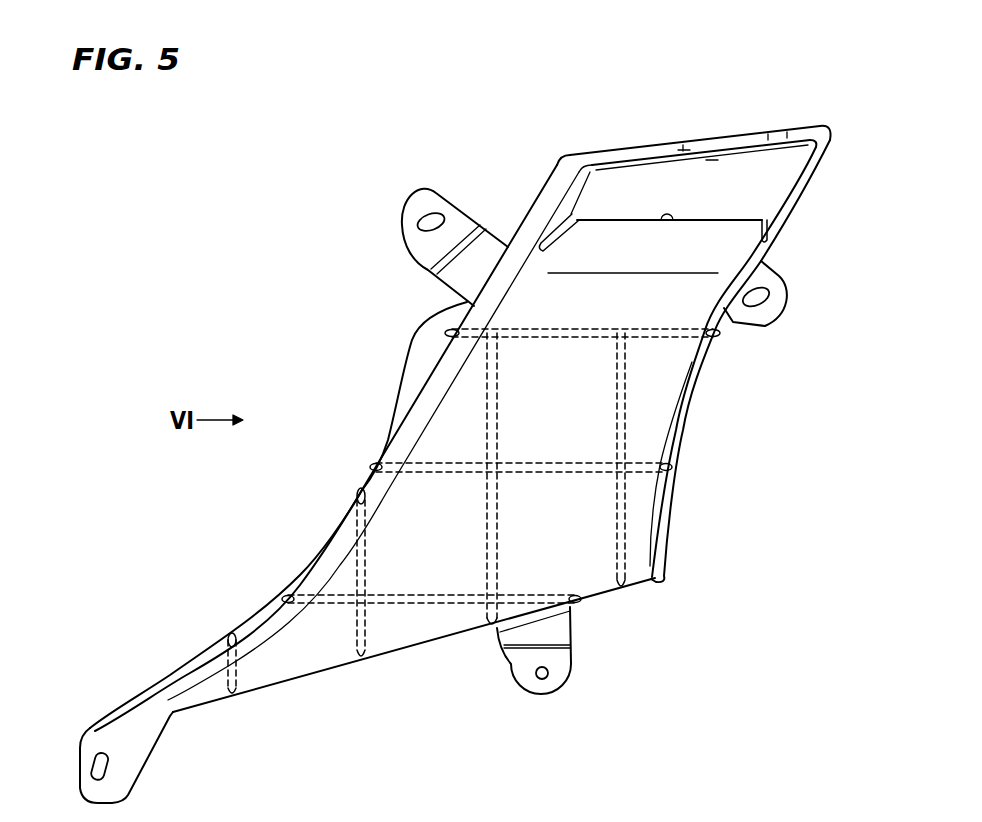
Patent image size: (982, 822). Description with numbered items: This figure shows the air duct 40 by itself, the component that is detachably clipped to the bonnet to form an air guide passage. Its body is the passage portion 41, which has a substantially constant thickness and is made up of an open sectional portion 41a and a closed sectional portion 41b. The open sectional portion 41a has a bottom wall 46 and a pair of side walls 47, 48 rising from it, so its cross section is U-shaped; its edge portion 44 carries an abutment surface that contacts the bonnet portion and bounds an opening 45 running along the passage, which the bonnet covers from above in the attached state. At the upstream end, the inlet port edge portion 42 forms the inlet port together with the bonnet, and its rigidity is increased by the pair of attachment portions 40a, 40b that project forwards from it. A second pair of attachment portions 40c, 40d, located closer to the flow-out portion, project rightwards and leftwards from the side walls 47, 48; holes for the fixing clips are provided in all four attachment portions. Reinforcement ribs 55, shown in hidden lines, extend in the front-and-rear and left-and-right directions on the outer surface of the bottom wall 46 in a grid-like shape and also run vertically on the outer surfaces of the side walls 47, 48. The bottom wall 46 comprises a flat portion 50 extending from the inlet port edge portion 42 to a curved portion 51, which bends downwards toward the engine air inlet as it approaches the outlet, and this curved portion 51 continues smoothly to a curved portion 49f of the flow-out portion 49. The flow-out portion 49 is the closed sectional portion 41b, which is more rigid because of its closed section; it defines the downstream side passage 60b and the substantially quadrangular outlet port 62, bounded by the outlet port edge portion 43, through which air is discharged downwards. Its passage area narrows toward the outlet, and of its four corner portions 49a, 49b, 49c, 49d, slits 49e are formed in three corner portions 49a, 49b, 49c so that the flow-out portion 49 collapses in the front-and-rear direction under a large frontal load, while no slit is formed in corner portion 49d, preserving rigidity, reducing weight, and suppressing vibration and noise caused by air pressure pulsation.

The air duct 40 is at (373, 191).
The attachment portion 40a is at (130, 757).
The attachment portion 40b is at (552, 675).
The attachment portion 40c is at (455, 207).
The attachment portion 40d is at (773, 293).
The passage portion 41 is at (449, 651).
The open sectional portion 41a is at (704, 445).
The closed sectional portion 41b is at (695, 140).
The inlet port edge portion 42 is at (330, 673).
The outlet port edge portion 43 is at (670, 225).
The edge portion 44 is at (780, 132).
The opening 45 is at (435, 432).
The bottom wall 46 is at (552, 457).
The side wall 47 is at (327, 577).
The side wall 48 is at (658, 489).
The flow-out portion 49 is at (612, 152).
The corner portion 49a is at (556, 231).
The corner portion 49b is at (773, 226).
The corner portion 49c is at (823, 127).
The corner portion 49d is at (577, 180).
The slit 49e is at (805, 147).
The curved portion 49f is at (723, 245).
The flat portion 50 is at (412, 627).
The curved portion 51 is at (605, 283).
The reinforcement ribs 55 is at (548, 473).
The downstream side passage 60b is at (687, 173).
The outlet port 62 is at (712, 170).